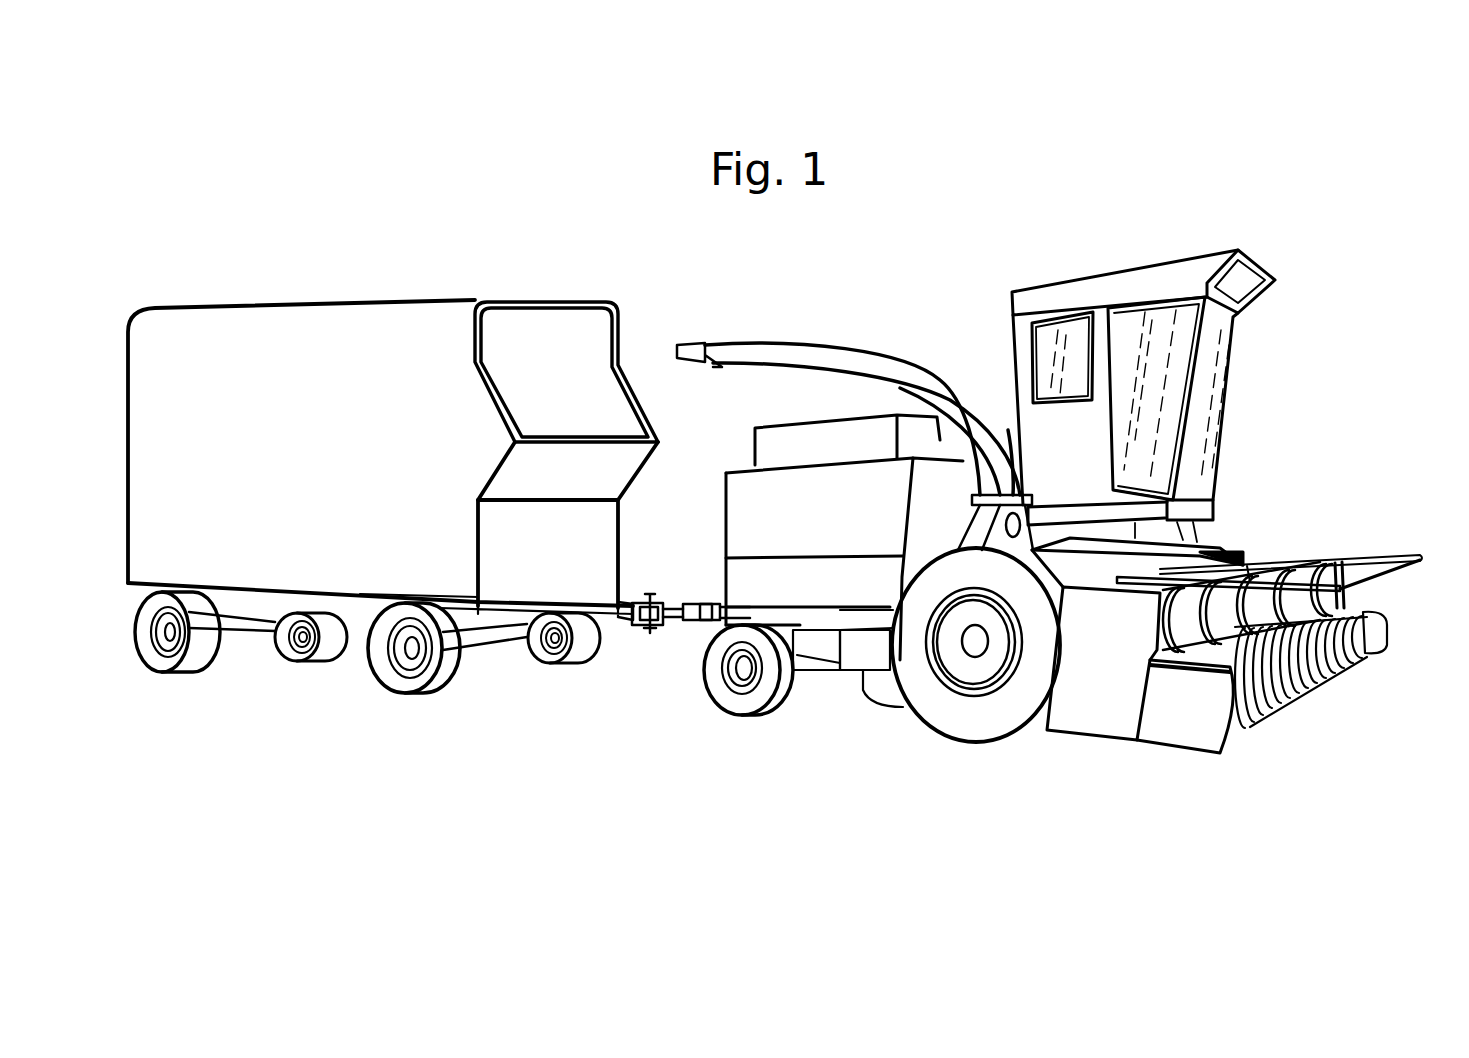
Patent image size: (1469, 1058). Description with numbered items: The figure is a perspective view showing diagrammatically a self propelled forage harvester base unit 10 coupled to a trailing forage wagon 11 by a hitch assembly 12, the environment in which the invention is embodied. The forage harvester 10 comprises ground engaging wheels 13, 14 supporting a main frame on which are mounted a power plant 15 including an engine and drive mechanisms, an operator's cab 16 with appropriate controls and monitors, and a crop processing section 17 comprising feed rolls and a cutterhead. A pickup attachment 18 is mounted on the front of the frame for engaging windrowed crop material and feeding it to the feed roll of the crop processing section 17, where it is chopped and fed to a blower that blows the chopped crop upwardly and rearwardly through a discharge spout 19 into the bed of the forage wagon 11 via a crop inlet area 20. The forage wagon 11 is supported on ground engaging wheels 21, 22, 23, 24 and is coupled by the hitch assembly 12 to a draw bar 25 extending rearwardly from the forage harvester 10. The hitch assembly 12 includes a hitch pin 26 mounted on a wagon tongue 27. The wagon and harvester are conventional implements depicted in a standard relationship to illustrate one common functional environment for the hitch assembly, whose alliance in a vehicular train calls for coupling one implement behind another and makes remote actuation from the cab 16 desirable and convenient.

The self propelled forage harvester base unit 10 is at (1070, 455).
The forage wagon 11 is at (393, 439).
The hitch assembly 12 is at (643, 634).
The ground engaging wheel 13 is at (993, 725).
The ground engaging wheel 14 is at (752, 698).
The power plant 15 is at (788, 544).
The operator's cab 16 is at (1110, 287).
The crop processing section 17 is at (1234, 520).
The pickup attachment 18 is at (1356, 530).
The discharge chute 19 is at (773, 343).
The crop inlet area 20 is at (543, 327).
The ground engaging wheel 21 is at (397, 677).
The ground engaging wheel 22 is at (172, 667).
The ground engaging wheel 23 is at (296, 648).
The ground engaging wheel 24 is at (553, 657).
The draw bar 25 is at (700, 626).
The hitch pin 26 is at (652, 598).
The wagon tongue 27 is at (617, 612).